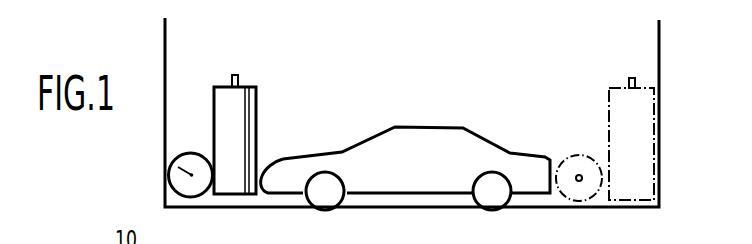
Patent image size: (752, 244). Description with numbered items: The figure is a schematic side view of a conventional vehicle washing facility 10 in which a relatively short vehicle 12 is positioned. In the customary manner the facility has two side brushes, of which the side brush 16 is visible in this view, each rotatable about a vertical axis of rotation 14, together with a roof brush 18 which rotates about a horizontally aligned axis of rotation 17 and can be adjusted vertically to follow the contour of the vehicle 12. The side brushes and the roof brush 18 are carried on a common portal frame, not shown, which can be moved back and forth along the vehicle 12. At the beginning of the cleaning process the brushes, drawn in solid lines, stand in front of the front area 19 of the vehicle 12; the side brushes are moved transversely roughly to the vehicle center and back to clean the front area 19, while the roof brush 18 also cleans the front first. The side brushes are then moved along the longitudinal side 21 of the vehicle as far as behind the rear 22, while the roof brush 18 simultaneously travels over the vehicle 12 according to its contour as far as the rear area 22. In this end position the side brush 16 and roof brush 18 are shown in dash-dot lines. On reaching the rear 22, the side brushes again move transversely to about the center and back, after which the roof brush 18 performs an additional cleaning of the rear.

The vehicle washing facility 10 is at (237, 24).
The vehicle 12 is at (425, 108).
The vertical axis of rotation 14 is at (231, 76).
The side brush 16 is at (228, 102).
The axis of rotation 17 is at (168, 165).
The roof brush 18 is at (174, 187).
The front area 19 is at (268, 194).
The longitudinal side 21 is at (410, 181).
The rear 22 is at (553, 197).